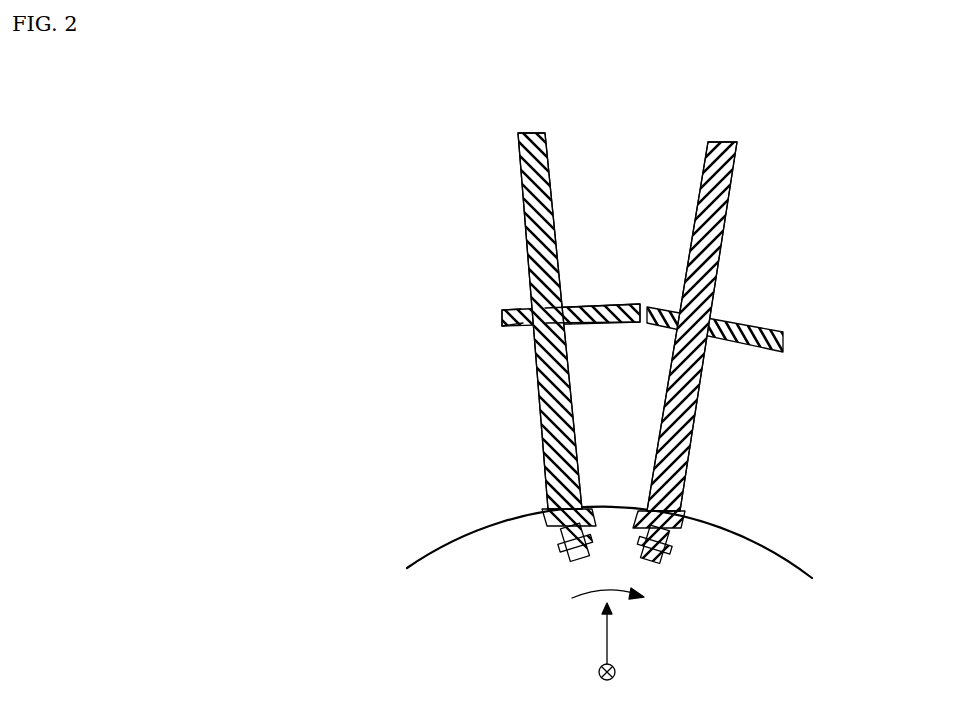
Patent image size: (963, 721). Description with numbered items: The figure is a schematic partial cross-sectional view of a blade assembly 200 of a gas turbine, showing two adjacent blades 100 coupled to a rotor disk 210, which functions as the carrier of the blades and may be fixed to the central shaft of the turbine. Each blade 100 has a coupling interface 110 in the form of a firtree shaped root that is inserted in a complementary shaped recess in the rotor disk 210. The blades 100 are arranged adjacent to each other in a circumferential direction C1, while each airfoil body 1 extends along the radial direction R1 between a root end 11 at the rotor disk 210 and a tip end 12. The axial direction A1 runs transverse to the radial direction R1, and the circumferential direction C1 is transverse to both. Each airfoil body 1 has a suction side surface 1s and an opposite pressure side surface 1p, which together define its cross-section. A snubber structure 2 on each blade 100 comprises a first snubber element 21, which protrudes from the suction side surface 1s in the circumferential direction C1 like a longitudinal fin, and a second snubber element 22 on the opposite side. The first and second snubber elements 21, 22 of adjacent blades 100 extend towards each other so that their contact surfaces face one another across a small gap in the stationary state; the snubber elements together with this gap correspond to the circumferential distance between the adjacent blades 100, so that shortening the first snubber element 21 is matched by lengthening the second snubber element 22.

The blade assembly 200 is at (221, 121).
The blade 100 is at (551, 362).
The airfoil body 1 is at (551, 339).
The suction side surface 1s is at (518, 158).
The pressure side surface 1p is at (548, 163).
The root end 11 is at (680, 510).
The tip end 12 is at (722, 142).
The snubber structure 2 is at (632, 319).
The first snubber element 21 is at (507, 308).
The second snubber element 22 is at (585, 323).
The coupling interface 110 is at (552, 540).
The rotor disk 210 is at (792, 565).
The axial direction A1 is at (618, 676).
The radial direction R1 is at (605, 642).
The circumferential direction C1 is at (610, 591).